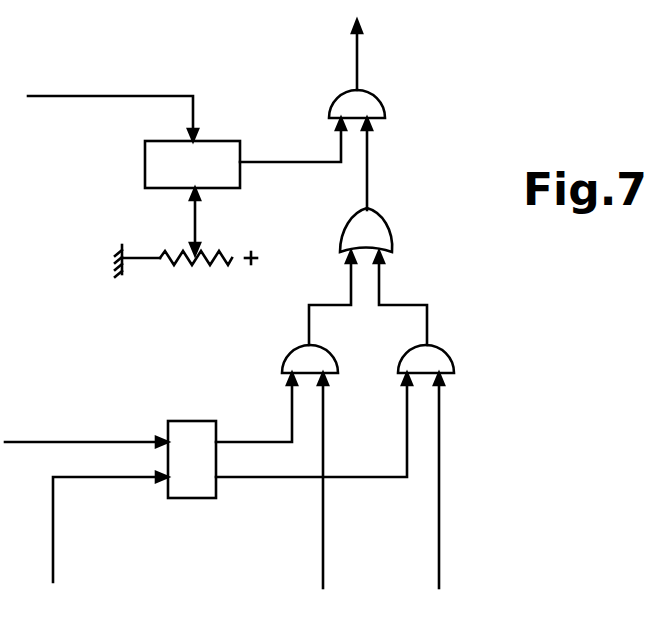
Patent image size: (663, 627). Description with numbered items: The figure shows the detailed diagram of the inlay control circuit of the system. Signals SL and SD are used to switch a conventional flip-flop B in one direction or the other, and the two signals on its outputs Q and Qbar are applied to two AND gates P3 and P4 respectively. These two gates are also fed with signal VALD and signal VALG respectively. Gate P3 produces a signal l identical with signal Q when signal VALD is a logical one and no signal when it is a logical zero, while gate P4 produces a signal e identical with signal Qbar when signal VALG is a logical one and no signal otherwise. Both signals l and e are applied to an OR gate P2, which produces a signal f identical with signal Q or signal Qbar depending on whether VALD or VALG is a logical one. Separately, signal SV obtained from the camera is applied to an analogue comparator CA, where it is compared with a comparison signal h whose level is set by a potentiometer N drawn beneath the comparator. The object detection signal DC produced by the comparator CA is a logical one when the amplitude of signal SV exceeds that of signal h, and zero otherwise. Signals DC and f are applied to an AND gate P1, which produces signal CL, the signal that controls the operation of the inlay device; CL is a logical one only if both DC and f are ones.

The signal SV is at (66, 96).
The analogue comparator CA is at (192, 164).
The object detection signal DC is at (272, 165).
The AND gate P1 is at (378, 99).
The signal CL is at (376, 54).
The signal f is at (368, 173).
The OR gate P2 is at (391, 238).
The signal l is at (332, 298).
The signal e is at (400, 298).
The AND gate P3 is at (283, 370).
The AND gate P4 is at (453, 369).
The flip-flop B is at (192, 459).
The signal SD is at (81, 442).
The signal SL is at (53, 570).
The output Q is at (226, 441).
The output Q-bar Qbar is at (247, 454).
The signal VAL D VALD is at (287, 480).
The signal VAL G VALG is at (476, 480).
The comparison signal h is at (208, 221).
The potentiometer N is at (186, 270).